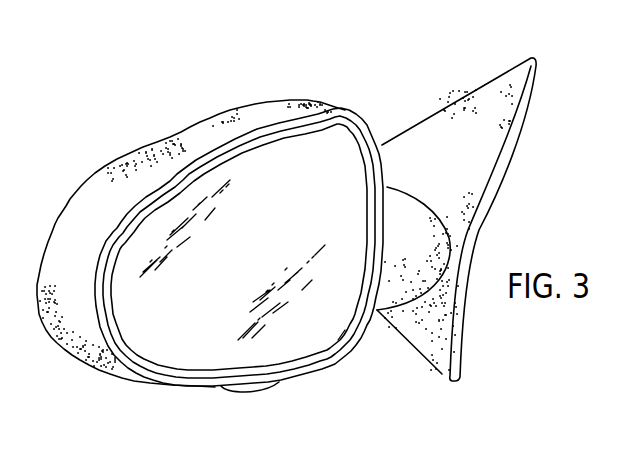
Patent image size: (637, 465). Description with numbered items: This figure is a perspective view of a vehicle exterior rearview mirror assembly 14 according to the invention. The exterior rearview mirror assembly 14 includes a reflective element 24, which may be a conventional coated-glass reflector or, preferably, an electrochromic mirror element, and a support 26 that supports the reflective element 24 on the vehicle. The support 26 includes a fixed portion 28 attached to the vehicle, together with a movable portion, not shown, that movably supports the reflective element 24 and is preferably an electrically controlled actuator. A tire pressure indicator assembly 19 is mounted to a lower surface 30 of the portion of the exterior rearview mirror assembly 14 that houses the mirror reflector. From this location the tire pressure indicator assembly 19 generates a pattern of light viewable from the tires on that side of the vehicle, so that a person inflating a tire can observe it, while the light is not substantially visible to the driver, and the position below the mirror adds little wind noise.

The exterior rearview mirror assembly 14 is at (62, 212).
The tire pressure indicator assembly 19 is at (248, 392).
The reflective element 24 is at (346, 108).
The support 26 is at (229, 110).
The fixed portion 28 is at (400, 311).
The lower surface 30 is at (492, 68).